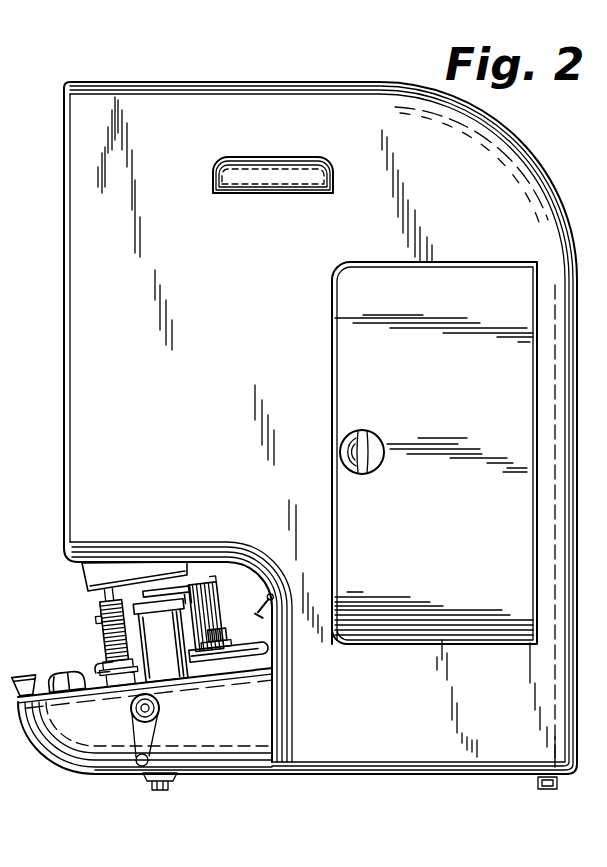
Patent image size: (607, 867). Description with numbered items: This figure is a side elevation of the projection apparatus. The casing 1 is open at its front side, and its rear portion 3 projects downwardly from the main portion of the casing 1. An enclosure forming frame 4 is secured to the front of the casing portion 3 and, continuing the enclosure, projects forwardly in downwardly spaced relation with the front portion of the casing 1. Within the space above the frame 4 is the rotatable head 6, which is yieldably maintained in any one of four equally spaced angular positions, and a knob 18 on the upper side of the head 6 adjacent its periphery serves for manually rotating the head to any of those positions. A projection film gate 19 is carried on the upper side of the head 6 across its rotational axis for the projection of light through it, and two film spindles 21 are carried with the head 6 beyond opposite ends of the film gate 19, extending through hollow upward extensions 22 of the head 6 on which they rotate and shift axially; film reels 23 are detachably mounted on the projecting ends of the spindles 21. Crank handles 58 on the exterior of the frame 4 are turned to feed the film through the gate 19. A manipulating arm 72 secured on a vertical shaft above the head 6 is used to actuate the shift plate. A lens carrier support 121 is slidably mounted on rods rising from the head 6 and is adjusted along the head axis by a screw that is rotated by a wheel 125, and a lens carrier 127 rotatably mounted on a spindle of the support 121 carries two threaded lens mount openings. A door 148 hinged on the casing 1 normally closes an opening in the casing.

The casing 1 is at (208, 84).
The rear portion of the casing 3 is at (492, 766).
The enclosure forming frame 4 is at (102, 768).
The head 6 is at (106, 690).
The knob 18 is at (30, 676).
The projection film gate 19 is at (108, 670).
The film spindles 21 is at (106, 630).
The hollow upward extensions 22 is at (173, 652).
The film reels 23 is at (105, 591).
The crank handles 58 is at (158, 727).
The manipulating arm 72 is at (68, 674).
The lens carrier support 121 is at (208, 613).
The wheel 125 is at (228, 637).
The lens carrier 127 is at (174, 600).
The door 148 is at (348, 358).